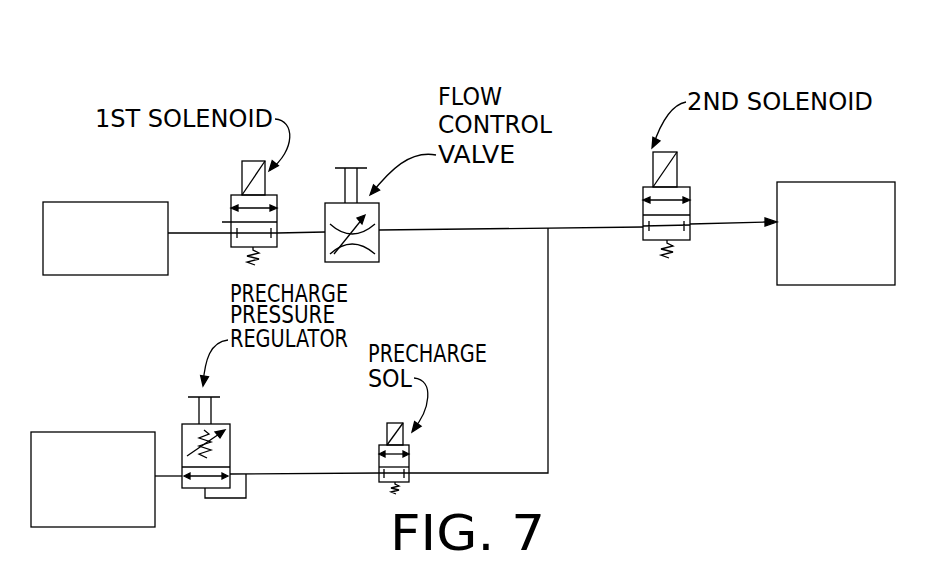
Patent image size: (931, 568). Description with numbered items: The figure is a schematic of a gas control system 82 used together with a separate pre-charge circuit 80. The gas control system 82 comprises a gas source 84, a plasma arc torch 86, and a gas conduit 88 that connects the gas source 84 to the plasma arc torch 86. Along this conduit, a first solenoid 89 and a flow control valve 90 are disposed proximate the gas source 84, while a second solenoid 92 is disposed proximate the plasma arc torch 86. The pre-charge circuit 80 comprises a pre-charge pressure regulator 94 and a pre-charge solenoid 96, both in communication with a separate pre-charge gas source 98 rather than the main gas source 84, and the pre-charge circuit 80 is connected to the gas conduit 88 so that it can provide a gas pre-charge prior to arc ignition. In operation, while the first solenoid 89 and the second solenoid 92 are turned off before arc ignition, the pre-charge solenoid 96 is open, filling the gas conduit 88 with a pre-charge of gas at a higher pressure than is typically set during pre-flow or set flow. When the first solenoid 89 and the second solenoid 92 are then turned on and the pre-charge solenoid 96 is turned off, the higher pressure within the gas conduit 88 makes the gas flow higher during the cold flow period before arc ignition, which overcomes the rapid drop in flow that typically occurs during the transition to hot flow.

The pre-charge circuit 80 is at (552, 376).
The gas control system 82 is at (606, 68).
The gas source 84 is at (128, 202).
The plasma arc torch 86 is at (812, 286).
The gas conduit 88 is at (610, 227).
The first solenoid 89 is at (238, 195).
The flow control valve 90 is at (379, 222).
The second solenoid 92 is at (643, 187).
The pre-charge pressure regulator 94 is at (232, 448).
The pre-charge solenoid 96 is at (410, 460).
The pre-charge gas source 98 is at (68, 432).